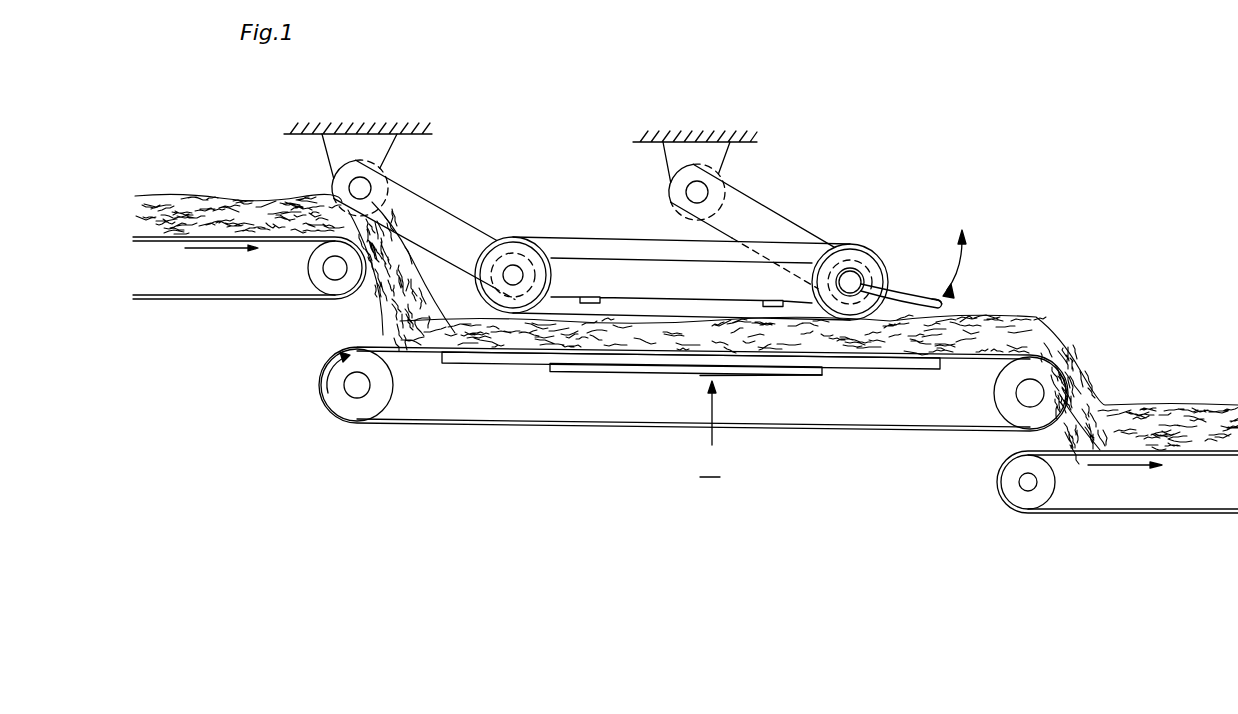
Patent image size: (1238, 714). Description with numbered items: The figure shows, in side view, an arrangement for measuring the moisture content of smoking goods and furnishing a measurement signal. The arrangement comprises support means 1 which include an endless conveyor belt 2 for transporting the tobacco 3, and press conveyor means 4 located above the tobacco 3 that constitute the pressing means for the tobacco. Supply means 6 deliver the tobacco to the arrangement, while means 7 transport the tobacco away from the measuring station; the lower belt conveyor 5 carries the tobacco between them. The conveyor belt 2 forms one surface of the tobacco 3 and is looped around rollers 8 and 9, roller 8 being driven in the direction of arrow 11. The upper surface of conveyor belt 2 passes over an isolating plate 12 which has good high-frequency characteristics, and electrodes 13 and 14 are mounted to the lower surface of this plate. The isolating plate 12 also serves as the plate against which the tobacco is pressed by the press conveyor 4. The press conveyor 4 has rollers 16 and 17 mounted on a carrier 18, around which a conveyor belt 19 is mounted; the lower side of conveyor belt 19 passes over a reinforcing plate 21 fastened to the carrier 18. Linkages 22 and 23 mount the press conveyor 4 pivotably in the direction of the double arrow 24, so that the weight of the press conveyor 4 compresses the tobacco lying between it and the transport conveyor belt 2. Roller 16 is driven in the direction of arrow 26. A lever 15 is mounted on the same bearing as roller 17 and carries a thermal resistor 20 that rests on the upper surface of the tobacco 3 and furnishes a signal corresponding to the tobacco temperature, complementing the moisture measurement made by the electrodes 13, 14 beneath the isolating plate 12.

The support means 1 is at (660, 452).
The conveyor belt 2 is at (412, 425).
The tobacco 3 is at (383, 305).
The press conveyor means 4 is at (858, 218).
The lower belt conveyor 5 is at (665, 406).
The supply means 6 is at (226, 322).
The means for transporting the tobacco away 7 is at (1120, 536).
The roller 8 is at (347, 410).
The roller 9 is at (1002, 392).
The arrow 11 is at (323, 390).
The isolating plate 12 is at (885, 365).
The electrode 13 is at (607, 378).
The electrode 14 is at (766, 382).
The lever 15 is at (896, 300).
The roller 16 is at (518, 250).
The roller 17 is at (866, 260).
The carrier 18 is at (605, 268).
The conveyor belt 19 is at (573, 238).
The thermal resistor 20 is at (950, 304).
The reinforcing plate 21 is at (676, 298).
The linkage 22 is at (430, 213).
The linkage 23 is at (750, 205).
The double arrow 24 is at (965, 268).
The arrow 26 is at (478, 242).